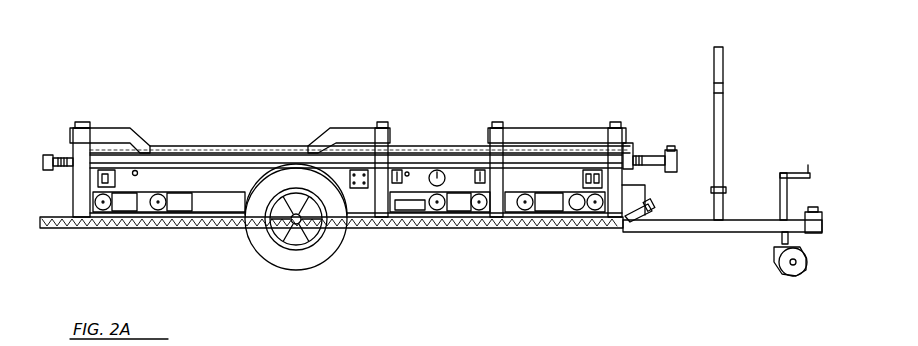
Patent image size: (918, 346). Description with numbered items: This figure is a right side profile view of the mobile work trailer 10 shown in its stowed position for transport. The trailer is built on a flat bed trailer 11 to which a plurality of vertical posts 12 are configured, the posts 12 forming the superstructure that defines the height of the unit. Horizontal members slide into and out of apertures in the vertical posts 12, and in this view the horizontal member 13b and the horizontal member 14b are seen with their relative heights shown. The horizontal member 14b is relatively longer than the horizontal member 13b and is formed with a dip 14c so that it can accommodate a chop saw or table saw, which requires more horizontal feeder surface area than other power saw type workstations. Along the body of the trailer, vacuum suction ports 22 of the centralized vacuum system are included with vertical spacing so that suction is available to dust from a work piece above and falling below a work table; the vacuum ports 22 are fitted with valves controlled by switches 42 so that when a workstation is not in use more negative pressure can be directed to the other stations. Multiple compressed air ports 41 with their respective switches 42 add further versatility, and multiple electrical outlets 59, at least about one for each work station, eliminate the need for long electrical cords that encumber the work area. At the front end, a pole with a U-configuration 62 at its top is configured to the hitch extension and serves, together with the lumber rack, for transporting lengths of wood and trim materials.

The mobile work trailer 10 is at (431, 144).
The flat bed trailer 11 is at (583, 228).
The vertical posts 12 is at (83, 228).
The horizontal member 13b is at (538, 135).
The horizontal member 14b is at (132, 128).
The dip 14c is at (255, 150).
The vacuum suction ports 22 is at (440, 170).
The compressed air ports 41 is at (136, 171).
The switches 42 is at (400, 170).
The electrical outlets 59 is at (593, 168).
The pole with a U-configuration 62 is at (723, 110).